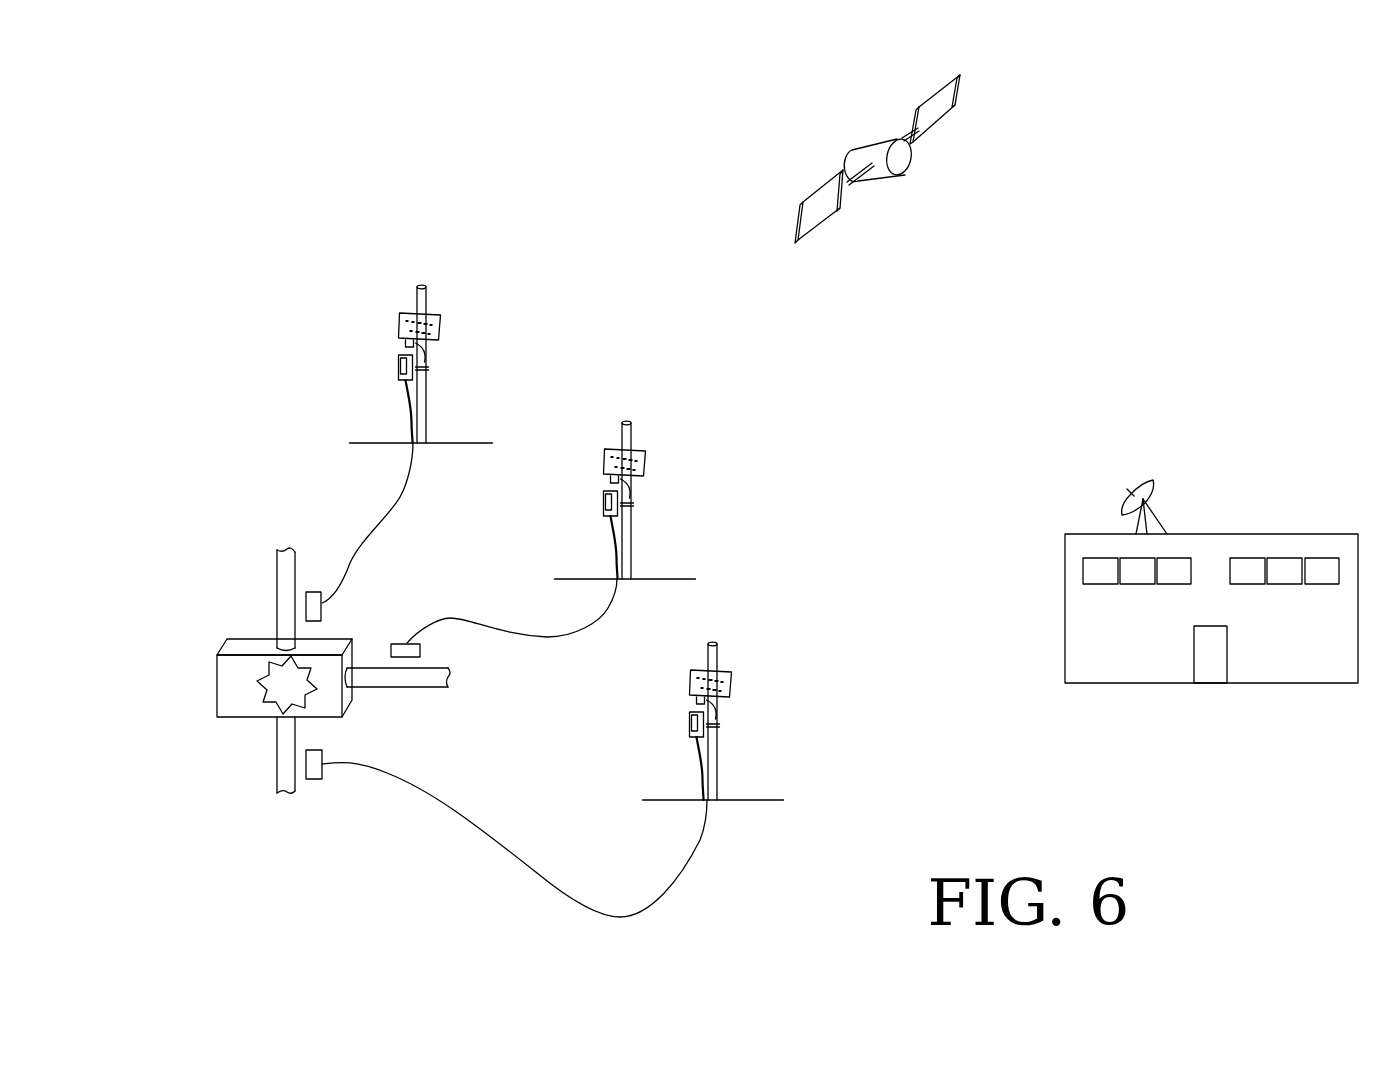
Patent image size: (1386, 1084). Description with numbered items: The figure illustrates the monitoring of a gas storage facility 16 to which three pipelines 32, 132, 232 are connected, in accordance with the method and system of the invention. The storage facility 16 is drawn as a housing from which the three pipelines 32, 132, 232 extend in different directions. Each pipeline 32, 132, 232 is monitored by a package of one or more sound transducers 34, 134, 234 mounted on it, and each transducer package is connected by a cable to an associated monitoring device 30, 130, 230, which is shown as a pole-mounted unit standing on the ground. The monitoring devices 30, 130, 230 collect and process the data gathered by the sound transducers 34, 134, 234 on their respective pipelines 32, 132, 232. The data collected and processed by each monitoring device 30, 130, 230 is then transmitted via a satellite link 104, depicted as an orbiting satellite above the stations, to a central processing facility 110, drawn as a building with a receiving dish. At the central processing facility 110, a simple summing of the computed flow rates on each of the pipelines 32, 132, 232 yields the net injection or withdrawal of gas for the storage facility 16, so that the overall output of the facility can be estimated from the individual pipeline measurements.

The storage facility 16 is at (238, 643).
The pipeline 32 is at (280, 593).
The sound transducer 34 is at (313, 593).
The pipeline 132 is at (415, 685).
The sound transducer 134 is at (398, 640).
The pipeline 232 is at (278, 753).
The sound transducer 234 is at (312, 785).
The monitoring device 30 is at (425, 297).
The monitoring device 130 is at (632, 437).
The monitoring device 230 is at (718, 656).
The satellite link 104 is at (880, 147).
The central processing facility 110 is at (1242, 541).